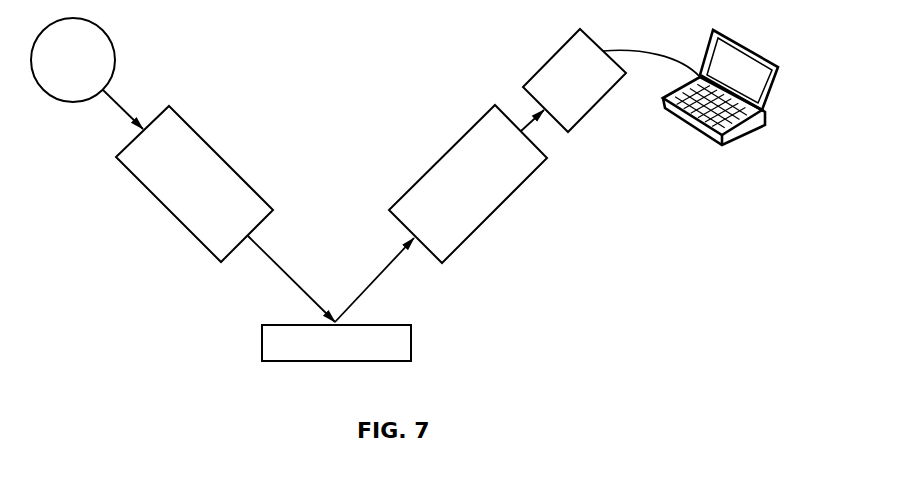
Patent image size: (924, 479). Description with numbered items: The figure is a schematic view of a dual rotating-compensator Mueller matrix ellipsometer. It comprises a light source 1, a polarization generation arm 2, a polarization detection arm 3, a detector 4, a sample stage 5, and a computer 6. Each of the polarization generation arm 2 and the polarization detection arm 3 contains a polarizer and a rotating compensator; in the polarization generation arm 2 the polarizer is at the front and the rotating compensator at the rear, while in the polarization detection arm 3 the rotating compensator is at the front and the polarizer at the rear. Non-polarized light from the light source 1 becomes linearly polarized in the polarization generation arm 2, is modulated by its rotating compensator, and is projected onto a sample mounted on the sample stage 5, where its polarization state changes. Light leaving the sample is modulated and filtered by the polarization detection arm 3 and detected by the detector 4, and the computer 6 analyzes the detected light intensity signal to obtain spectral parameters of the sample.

The light source 1 is at (60, 88).
The polarization generation arm 2 is at (188, 213).
The polarization detection arm 3 is at (472, 213).
The detector 4 is at (565, 112).
The sample stage 5 is at (282, 350).
The computer 6 is at (700, 115).